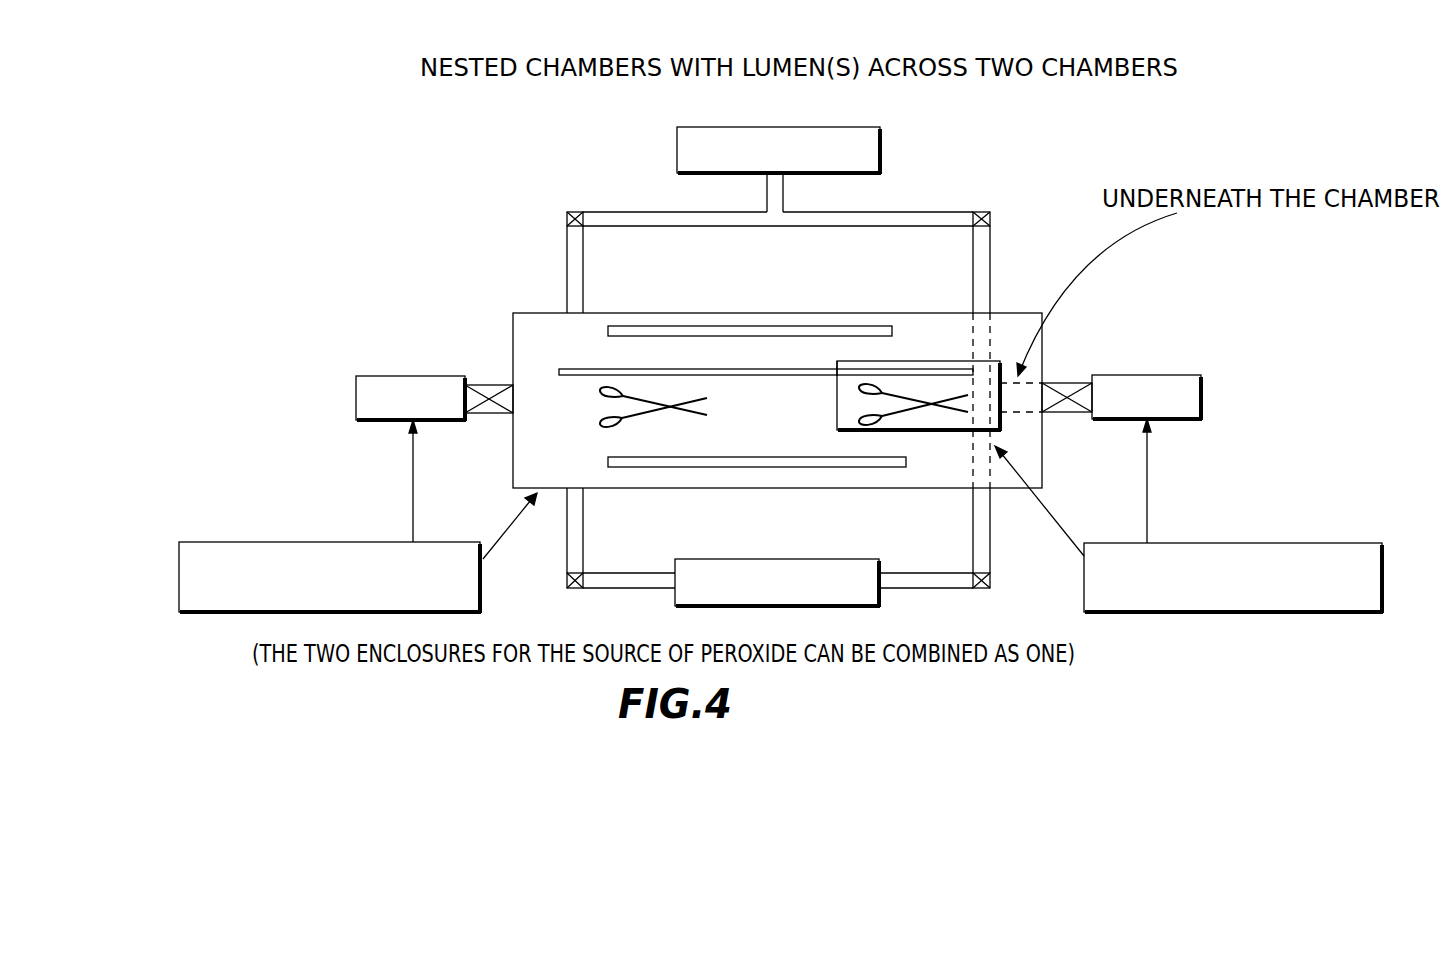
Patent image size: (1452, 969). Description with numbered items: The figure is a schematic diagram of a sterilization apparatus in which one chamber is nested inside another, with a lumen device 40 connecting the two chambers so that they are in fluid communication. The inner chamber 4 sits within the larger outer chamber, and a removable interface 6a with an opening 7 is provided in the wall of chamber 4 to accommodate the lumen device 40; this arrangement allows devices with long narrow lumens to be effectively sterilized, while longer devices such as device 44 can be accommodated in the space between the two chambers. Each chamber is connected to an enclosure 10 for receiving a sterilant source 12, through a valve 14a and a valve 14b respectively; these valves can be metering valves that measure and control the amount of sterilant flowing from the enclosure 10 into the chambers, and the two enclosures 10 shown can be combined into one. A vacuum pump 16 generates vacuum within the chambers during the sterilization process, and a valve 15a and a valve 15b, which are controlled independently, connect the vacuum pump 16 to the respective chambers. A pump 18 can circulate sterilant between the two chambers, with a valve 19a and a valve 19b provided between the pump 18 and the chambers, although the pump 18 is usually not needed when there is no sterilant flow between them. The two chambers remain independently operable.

The chamber 4 is at (919, 396).
The removable interface 6a is at (860, 430).
The opening 7 is at (837, 372).
The enclosure 10 is at (779, 398).
The sterilant source 12 is at (781, 577).
The valve 14a is at (486, 385).
The valve 14b is at (1058, 383).
The valve 15a is at (572, 212).
The valve 15b is at (983, 212).
The vacuum pump 16 is at (720, 127).
The pump 18 is at (777, 583).
The valve 19a is at (567, 580).
The valve 19b is at (990, 578).
The lumen device 40 is at (758, 368).
The device 44 is at (696, 457).